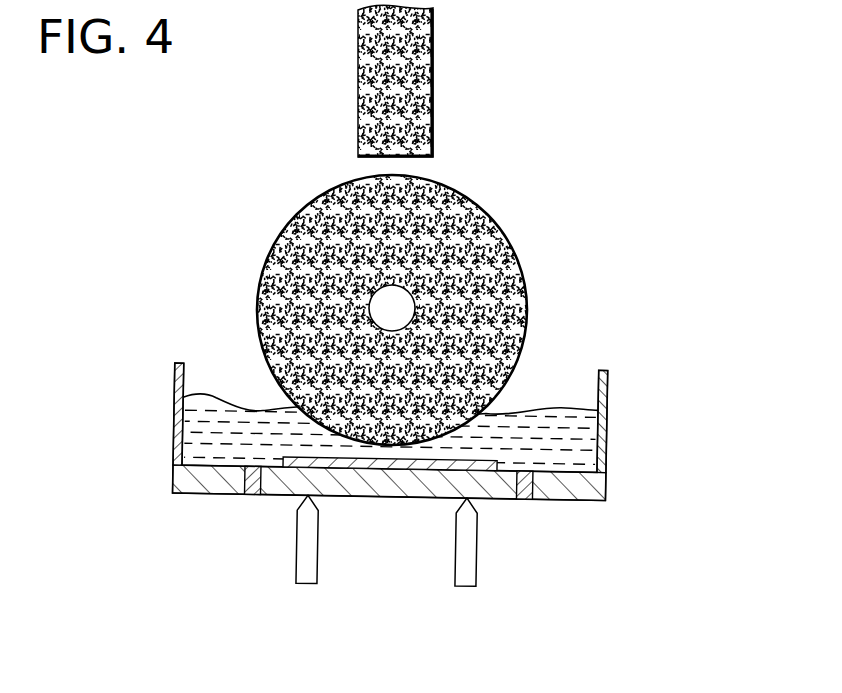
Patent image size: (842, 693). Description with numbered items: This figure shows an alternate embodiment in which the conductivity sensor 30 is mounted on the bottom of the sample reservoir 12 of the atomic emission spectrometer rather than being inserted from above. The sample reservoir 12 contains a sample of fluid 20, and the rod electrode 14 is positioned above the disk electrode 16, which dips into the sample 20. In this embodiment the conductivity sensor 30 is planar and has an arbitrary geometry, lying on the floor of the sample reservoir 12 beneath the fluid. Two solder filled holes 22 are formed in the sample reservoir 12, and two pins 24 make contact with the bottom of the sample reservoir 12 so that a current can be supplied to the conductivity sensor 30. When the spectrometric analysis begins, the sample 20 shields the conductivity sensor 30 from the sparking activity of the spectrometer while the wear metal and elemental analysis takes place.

The sample reservoir 12 is at (608, 420).
The rod electrode 14 is at (434, 57).
The disk electrode 16 is at (496, 222).
The sample of fluid 20 is at (207, 437).
The solder filled holes 22 is at (252, 494).
The pins 24 is at (298, 565).
The conductivity sensor 30 is at (475, 457).